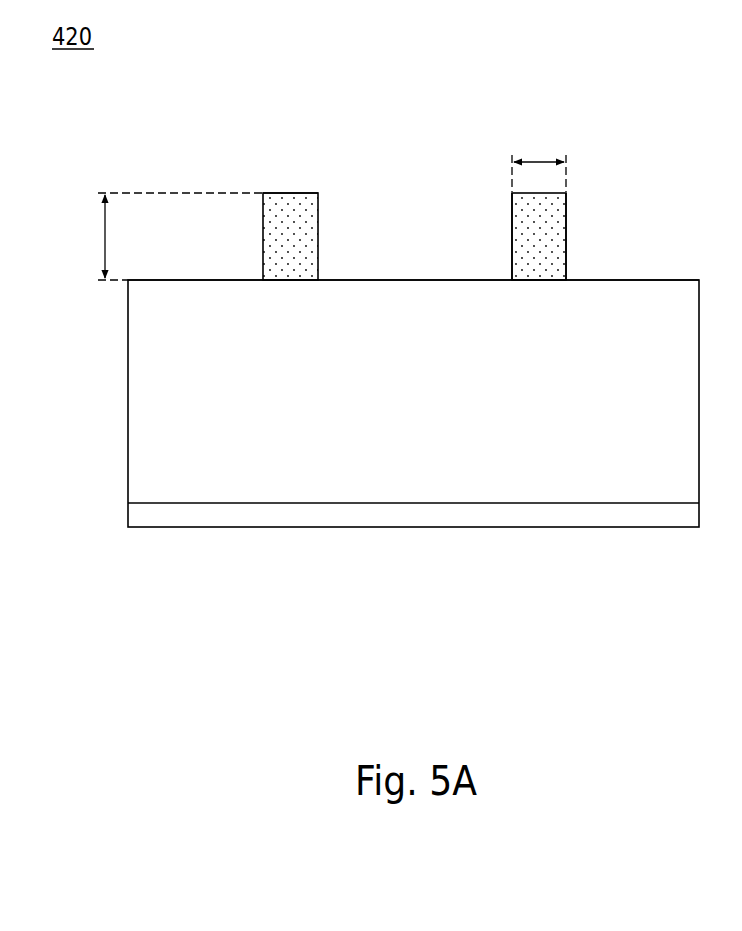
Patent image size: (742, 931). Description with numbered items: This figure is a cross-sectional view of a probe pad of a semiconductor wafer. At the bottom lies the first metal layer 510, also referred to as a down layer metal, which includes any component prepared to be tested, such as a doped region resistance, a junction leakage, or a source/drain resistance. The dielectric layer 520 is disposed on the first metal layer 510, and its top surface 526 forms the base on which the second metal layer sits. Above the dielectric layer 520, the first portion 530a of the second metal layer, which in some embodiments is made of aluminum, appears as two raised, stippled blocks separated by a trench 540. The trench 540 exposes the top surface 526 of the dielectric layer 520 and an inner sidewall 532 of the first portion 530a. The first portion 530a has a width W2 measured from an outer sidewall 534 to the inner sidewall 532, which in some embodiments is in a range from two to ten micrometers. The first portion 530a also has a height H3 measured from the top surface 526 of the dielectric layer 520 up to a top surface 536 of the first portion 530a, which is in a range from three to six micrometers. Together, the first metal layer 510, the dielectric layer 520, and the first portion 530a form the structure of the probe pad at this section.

The first metal layer 510 is at (136, 514).
The dielectric layer 520 is at (136, 392).
The top surface of the dielectric layer 526 is at (362, 279).
The first portion 530a is at (276, 237).
The inner sidewall 532 is at (510, 249).
The outer sidewall 534 is at (568, 249).
The top surface of the first portion 536 is at (290, 192).
The trench 540 is at (416, 192).
The height of the first portion H3 is at (163, 236).
The width of the first portion W2 is at (539, 160).